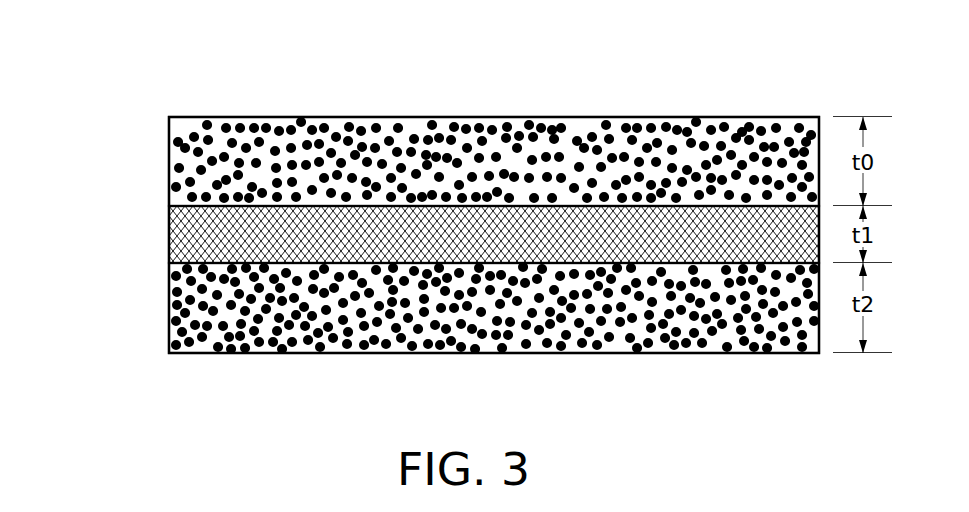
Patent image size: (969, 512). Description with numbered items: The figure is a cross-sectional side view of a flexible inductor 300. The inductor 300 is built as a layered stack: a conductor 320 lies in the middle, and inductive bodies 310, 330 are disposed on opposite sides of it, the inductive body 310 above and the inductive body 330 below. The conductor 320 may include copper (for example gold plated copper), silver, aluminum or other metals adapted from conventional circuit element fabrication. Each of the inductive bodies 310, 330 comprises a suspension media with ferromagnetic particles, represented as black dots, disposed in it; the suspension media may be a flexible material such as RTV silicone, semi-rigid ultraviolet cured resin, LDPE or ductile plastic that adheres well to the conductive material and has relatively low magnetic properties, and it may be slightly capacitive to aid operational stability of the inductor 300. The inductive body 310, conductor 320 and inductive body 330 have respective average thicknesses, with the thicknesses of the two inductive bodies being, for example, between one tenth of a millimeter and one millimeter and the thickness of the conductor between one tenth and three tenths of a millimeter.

The inductor 300 is at (70, 73).
The inductive body 310 is at (158, 160).
The conductor 320 is at (158, 235).
The inductive body 330 is at (158, 308).